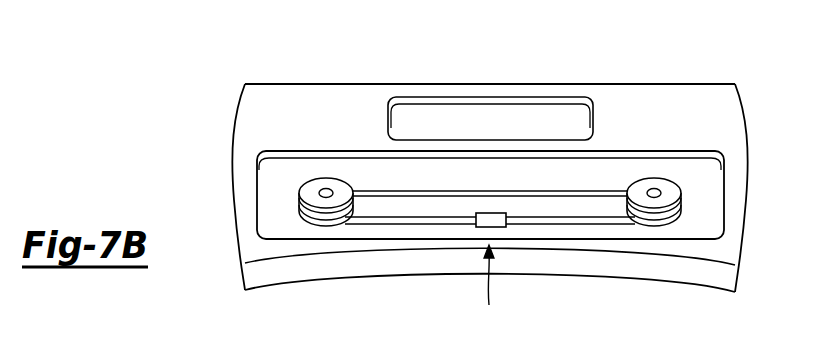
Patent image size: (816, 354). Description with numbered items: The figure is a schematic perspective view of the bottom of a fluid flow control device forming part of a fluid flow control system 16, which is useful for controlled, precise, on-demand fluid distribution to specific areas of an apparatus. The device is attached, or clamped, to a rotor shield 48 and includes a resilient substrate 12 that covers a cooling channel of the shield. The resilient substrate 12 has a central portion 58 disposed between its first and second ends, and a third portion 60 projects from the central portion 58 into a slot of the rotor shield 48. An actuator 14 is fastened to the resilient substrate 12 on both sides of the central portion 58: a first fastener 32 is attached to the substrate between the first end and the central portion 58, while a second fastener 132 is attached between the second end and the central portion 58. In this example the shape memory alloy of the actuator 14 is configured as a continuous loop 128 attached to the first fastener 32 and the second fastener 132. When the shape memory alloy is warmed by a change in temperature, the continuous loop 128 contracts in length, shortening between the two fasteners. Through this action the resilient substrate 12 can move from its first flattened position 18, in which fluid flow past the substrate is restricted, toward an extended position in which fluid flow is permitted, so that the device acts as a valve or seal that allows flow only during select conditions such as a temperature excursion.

The resilient substrate 12 is at (710, 192).
The actuator 14 is at (584, 189).
The fluid flow control system 16 is at (222, 84).
The first flattened position 18 is at (490, 290).
The first fastener 32 is at (657, 181).
The rotor shield 48 is at (332, 100).
The central portion 58 is at (363, 177).
The third portion 60 is at (482, 113).
The continuous loop 128 is at (540, 224).
The second fastener 132 is at (313, 190).